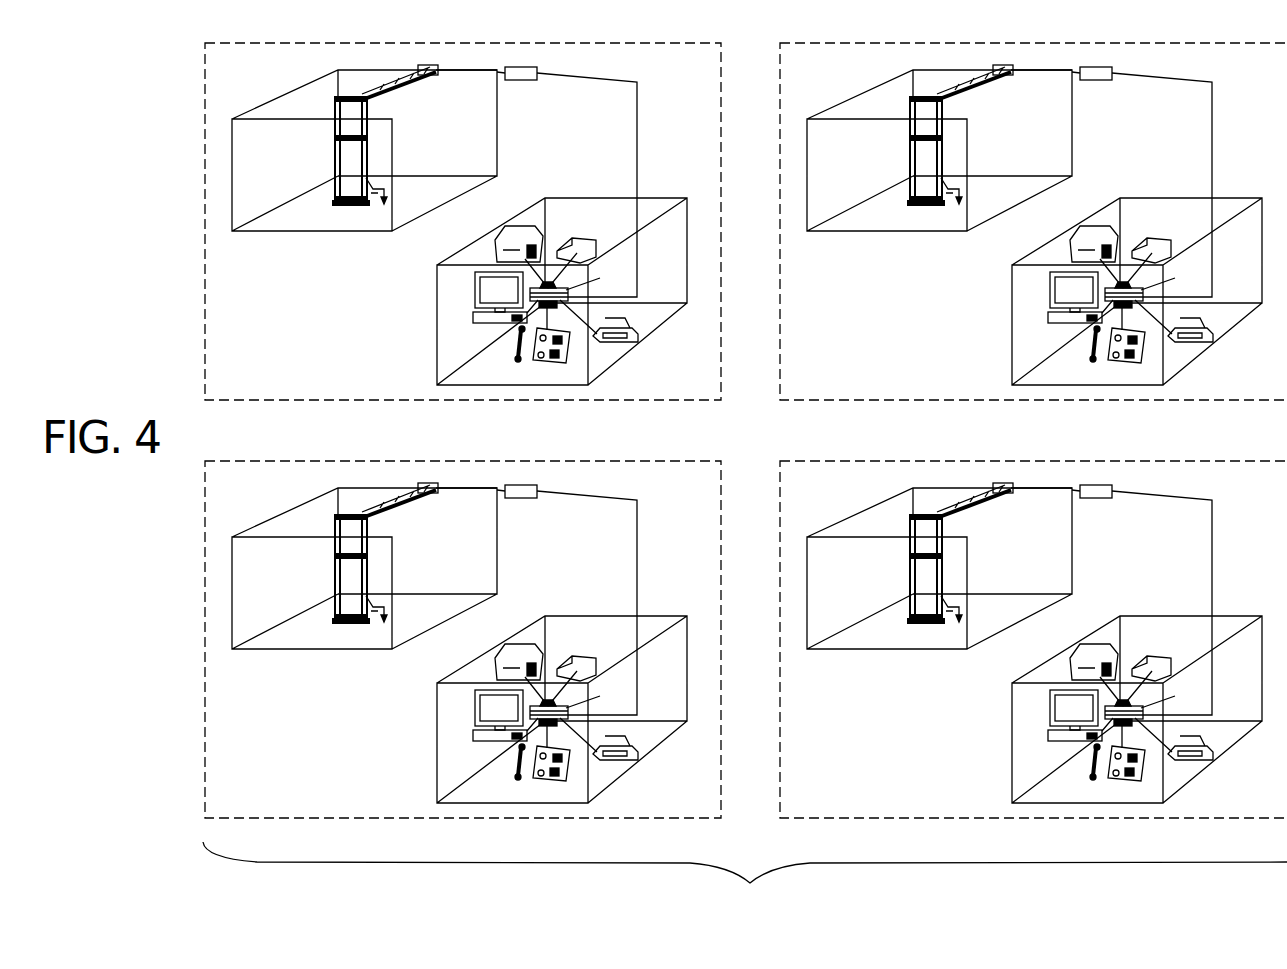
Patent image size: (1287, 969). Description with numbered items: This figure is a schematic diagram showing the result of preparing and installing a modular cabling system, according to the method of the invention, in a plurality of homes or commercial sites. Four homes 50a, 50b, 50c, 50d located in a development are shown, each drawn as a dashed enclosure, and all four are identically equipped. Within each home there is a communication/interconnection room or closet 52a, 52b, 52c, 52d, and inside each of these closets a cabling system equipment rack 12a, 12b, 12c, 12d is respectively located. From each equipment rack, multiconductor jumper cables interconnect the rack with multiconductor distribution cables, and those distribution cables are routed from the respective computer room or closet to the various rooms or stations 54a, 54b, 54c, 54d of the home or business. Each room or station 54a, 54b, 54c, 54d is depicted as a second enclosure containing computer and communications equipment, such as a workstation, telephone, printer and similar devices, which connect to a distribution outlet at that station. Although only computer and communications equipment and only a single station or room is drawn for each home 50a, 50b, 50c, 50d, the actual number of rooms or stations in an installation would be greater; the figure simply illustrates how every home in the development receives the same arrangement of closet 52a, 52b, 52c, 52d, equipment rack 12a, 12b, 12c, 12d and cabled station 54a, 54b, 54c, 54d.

The home 50a is at (612, 53).
The home 50b is at (1033, 204).
The home 50c is at (463, 622).
The home 50d is at (1033, 622).
The cabling system equipment rack 12a is at (332, 148).
The cabling system equipment rack 12b is at (928, 135).
The cabling system equipment rack 12c is at (353, 553).
The cabling system equipment rack 12d is at (928, 553).
The communication/interconnection room or closet 52a is at (486, 130).
The communication/interconnection room or closet 52b is at (1111, 182).
The communication/interconnection room or closet 52c is at (536, 600).
The communication/interconnection room or closet 52d is at (1111, 600).
The room or station 54a is at (442, 326).
The room or station 54b is at (1109, 291).
The room or station 54c is at (534, 709).
The room or station 54d is at (1109, 709).